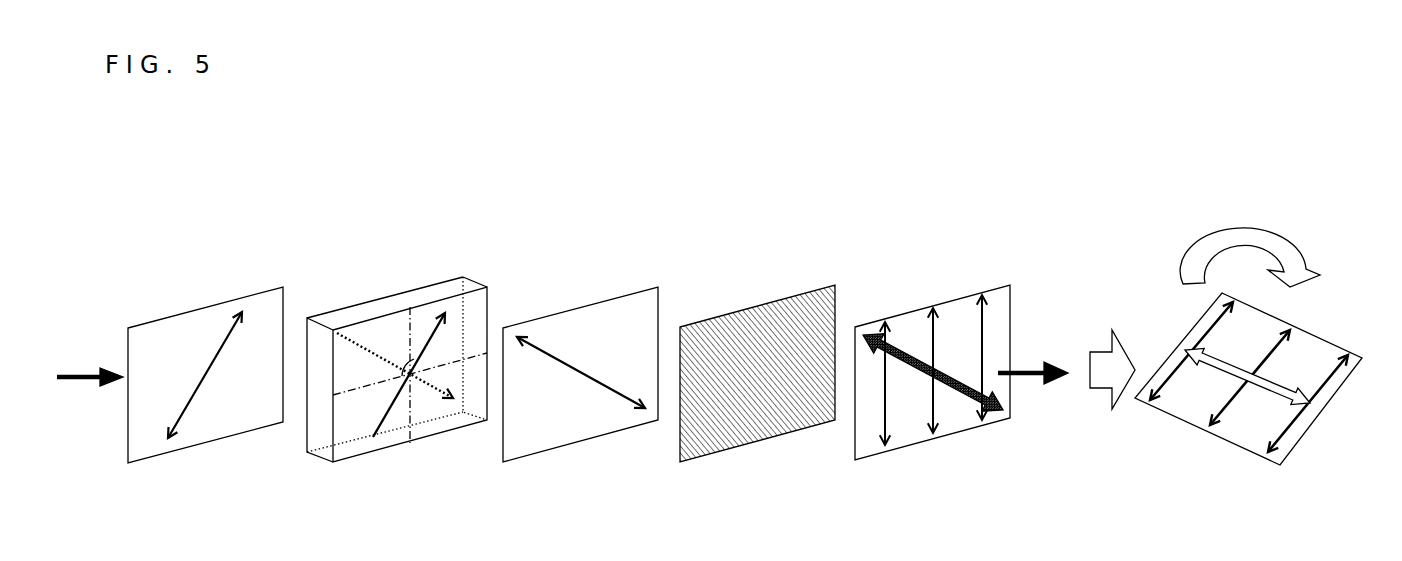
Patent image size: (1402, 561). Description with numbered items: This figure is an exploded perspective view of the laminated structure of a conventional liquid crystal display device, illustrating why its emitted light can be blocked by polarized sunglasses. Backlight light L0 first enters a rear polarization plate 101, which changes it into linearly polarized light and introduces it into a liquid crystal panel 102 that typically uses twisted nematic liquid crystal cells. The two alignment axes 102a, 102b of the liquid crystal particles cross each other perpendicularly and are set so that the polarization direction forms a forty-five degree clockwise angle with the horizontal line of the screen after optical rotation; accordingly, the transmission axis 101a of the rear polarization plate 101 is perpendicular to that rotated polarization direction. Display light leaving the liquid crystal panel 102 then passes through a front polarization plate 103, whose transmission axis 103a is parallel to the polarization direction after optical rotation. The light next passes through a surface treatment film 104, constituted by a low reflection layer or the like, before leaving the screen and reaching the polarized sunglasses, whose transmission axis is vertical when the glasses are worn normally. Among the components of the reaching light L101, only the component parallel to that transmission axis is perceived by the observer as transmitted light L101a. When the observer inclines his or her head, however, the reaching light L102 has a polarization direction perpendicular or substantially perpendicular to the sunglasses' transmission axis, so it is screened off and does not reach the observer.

The backlight light L0 is at (90, 366).
The rear polarization plate 101 is at (205, 367).
The transmission axis of the rear polarization plate 101a is at (192, 407).
The liquid crystal panel 102 is at (397, 367).
The alignment axis 102a is at (370, 355).
The alignment axis 102b is at (397, 407).
The front polarization plate 103 is at (580, 367).
The transmission axis of the front polarization plate 103a is at (582, 375).
The surface treatment film 104 is at (757, 307).
The reaching light L101 is at (960, 393).
The transmitted light L101a is at (1037, 364).
The reaching light L102 is at (1223, 372).